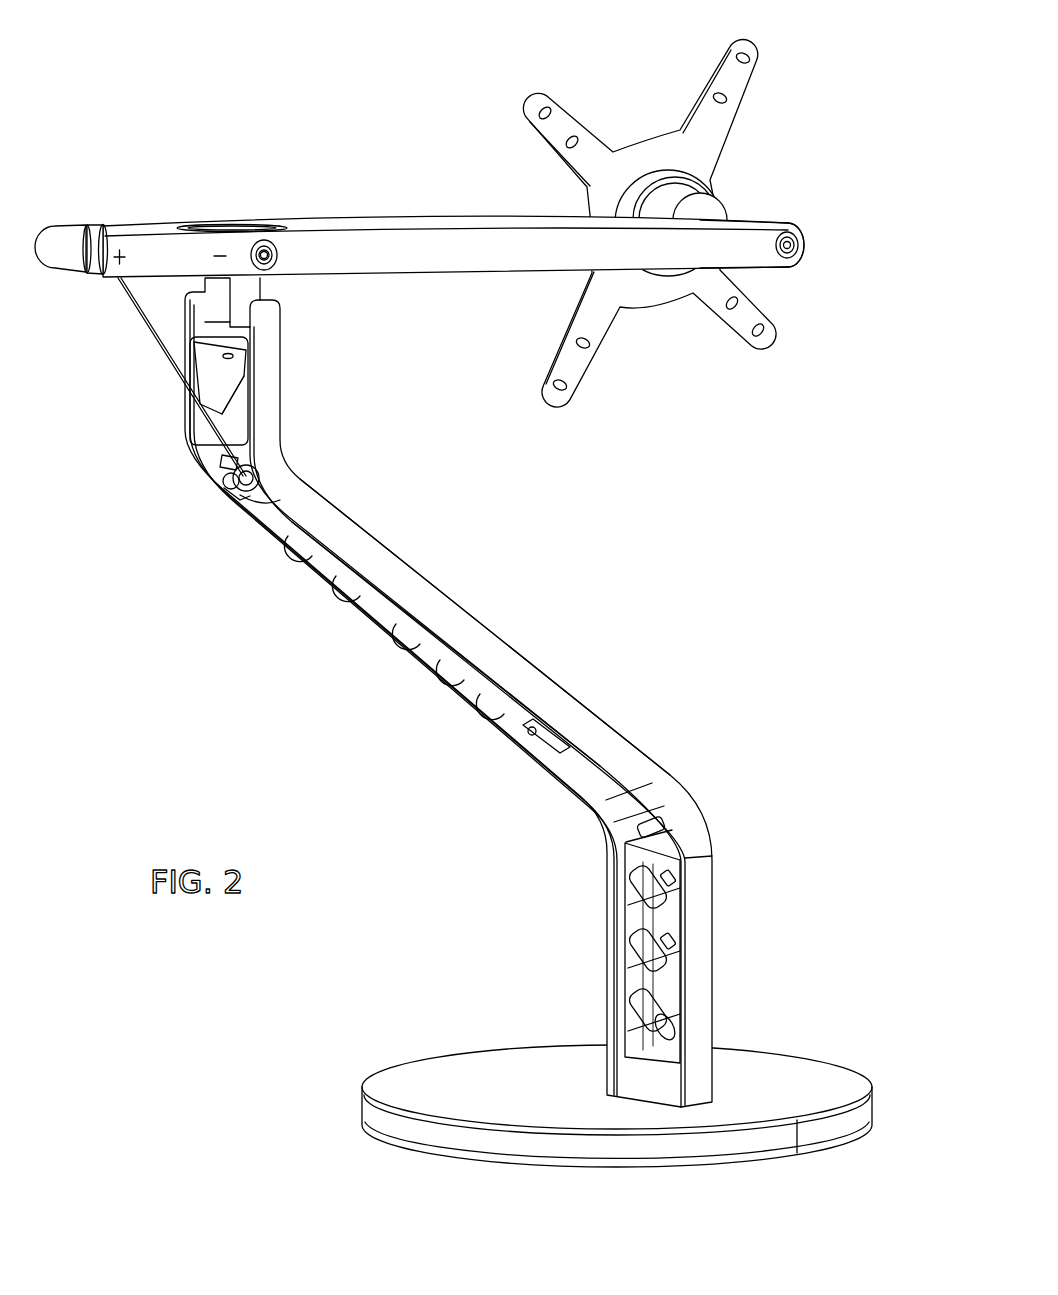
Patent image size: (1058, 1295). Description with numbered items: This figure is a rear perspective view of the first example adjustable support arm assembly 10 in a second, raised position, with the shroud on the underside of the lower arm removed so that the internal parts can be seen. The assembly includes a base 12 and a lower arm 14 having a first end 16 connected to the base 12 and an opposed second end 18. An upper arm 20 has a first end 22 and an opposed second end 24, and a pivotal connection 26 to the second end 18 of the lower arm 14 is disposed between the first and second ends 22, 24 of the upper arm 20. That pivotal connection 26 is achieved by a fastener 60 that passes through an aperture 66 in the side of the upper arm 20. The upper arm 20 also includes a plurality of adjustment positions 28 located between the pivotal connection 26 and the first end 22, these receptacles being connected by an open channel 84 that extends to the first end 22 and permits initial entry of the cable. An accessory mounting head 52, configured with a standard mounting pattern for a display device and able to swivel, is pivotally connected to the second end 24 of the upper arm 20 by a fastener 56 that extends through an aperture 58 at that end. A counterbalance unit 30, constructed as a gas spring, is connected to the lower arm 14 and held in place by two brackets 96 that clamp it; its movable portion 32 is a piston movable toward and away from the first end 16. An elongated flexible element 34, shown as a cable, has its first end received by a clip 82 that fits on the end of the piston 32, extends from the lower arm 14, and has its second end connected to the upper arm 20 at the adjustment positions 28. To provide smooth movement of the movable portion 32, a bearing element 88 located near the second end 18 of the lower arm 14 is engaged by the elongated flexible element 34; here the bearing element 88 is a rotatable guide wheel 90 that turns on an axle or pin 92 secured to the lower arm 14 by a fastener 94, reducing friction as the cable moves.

The adjustable support arm assembly 10 is at (257, 117).
The base 12 is at (412, 1060).
The lower arm 14 is at (442, 688).
The first end 16 is at (700, 1082).
The second end 18 is at (271, 342).
The upper arm 20 is at (437, 242).
The first end 22 is at (110, 230).
The second end 24 is at (766, 256).
The pivotal connection 26 is at (263, 270).
The adjustment positions 28 is at (121, 229).
The counterbalance unit 30 is at (342, 577).
The movable portion 32 is at (494, 696).
The elongated flexible element 34 is at (150, 335).
The accessory mounting head 52 is at (726, 195).
The fastener 56 is at (796, 254).
The aperture 58 is at (797, 228).
The fastener 60 is at (271, 250).
The aperture 66 is at (274, 259).
The clip 82 is at (541, 741).
The open channel 84 is at (100, 237).
The bearing element 88 is at (254, 475).
The guide wheel 90 is at (266, 482).
The axle or pin 92 is at (236, 465).
The fastener 94 is at (232, 474).
The brackets 96 is at (291, 545).